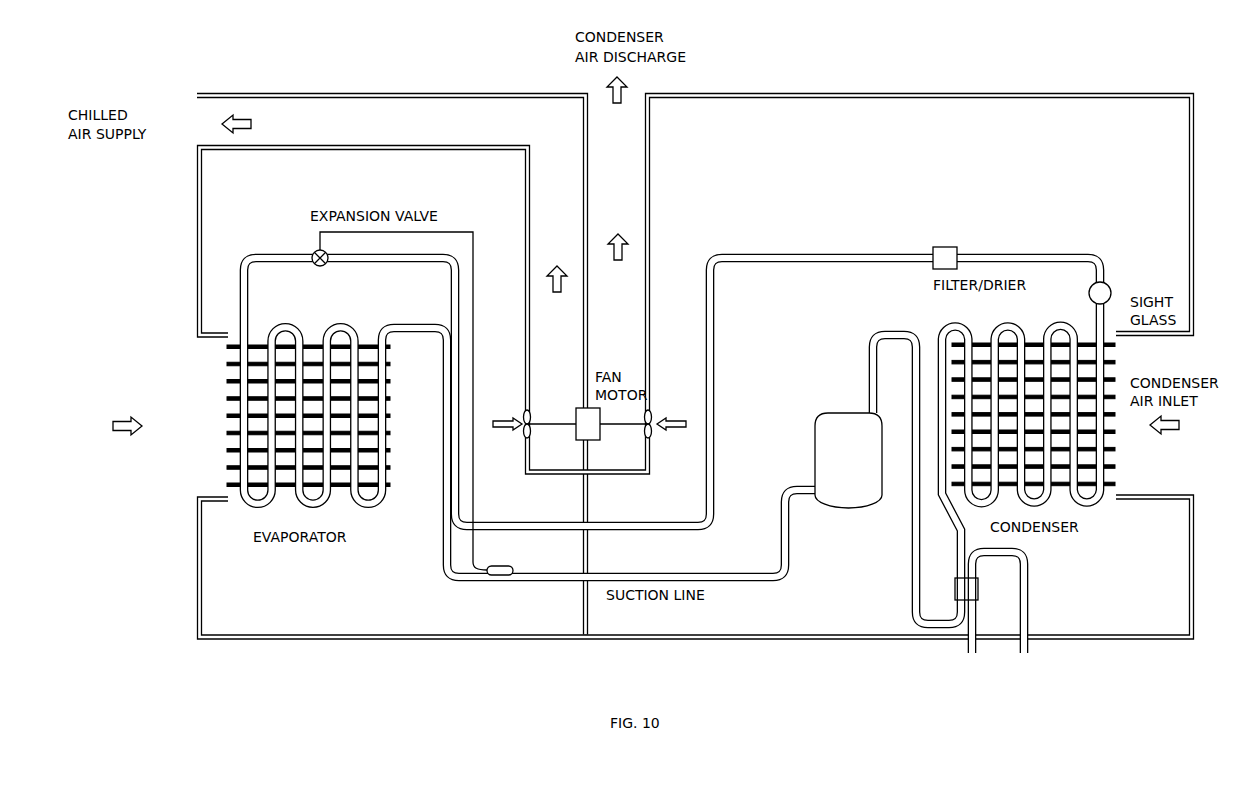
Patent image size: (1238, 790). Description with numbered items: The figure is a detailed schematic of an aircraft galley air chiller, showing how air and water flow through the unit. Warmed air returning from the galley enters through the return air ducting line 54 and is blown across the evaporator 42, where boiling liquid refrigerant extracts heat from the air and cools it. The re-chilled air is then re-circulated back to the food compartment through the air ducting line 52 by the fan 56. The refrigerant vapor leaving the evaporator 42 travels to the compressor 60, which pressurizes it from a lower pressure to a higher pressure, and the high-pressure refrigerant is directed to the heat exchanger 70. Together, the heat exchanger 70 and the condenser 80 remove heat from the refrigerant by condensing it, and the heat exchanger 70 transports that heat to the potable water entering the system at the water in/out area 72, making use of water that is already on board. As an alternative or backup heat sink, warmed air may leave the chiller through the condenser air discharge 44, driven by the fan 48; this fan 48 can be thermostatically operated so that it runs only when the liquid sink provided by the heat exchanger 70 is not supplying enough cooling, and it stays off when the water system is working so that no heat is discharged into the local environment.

The air ducting line 52 is at (415, 93).
The condenser air discharge 44 is at (630, 100).
The evaporator 42 is at (337, 323).
The fan 56 is at (520, 440).
The fan 48 is at (655, 440).
The compressor 60 is at (833, 413).
The condenser 80 is at (1116, 436).
The return air ducting line 54 is at (138, 461).
The heat exchanger 70 is at (955, 588).
The water in/out area 72 is at (1047, 653).